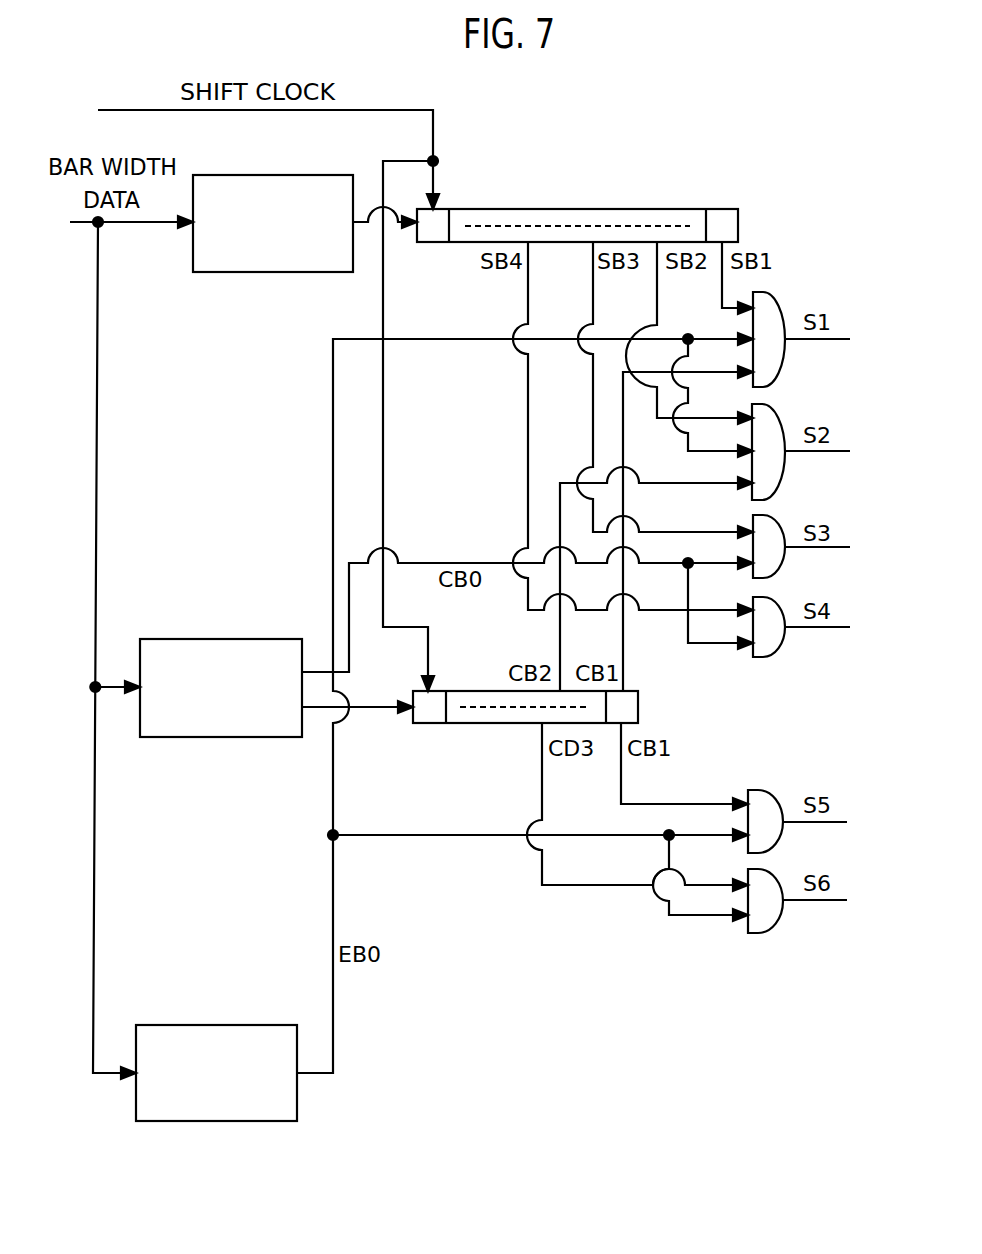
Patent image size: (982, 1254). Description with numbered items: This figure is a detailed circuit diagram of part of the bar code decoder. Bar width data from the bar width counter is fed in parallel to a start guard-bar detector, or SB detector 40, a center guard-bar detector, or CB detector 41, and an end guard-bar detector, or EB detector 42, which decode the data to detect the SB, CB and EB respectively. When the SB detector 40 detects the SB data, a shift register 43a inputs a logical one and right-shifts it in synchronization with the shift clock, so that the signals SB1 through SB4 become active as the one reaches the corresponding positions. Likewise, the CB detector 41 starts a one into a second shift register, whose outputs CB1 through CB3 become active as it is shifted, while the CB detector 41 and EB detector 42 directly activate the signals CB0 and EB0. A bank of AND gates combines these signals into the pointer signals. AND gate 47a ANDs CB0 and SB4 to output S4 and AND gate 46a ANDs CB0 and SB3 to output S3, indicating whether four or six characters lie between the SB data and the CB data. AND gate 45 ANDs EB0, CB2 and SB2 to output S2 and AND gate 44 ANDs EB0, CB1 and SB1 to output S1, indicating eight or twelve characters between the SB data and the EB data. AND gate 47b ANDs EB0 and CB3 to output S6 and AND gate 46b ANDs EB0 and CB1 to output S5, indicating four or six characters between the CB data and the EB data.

The start guard-bar detector 40 is at (240, 175).
The center guard-bar detector 41 is at (195, 639).
The end guard-bar detector 42 is at (157, 1030).
The shift register 43a is at (663, 209).
The AND gate 44 is at (780, 303).
The AND gate 45 is at (780, 417).
The AND gate 46a is at (775, 531).
The AND gate 47a is at (770, 627).
The AND gate 46b is at (768, 802).
The AND gate 47b is at (770, 912).